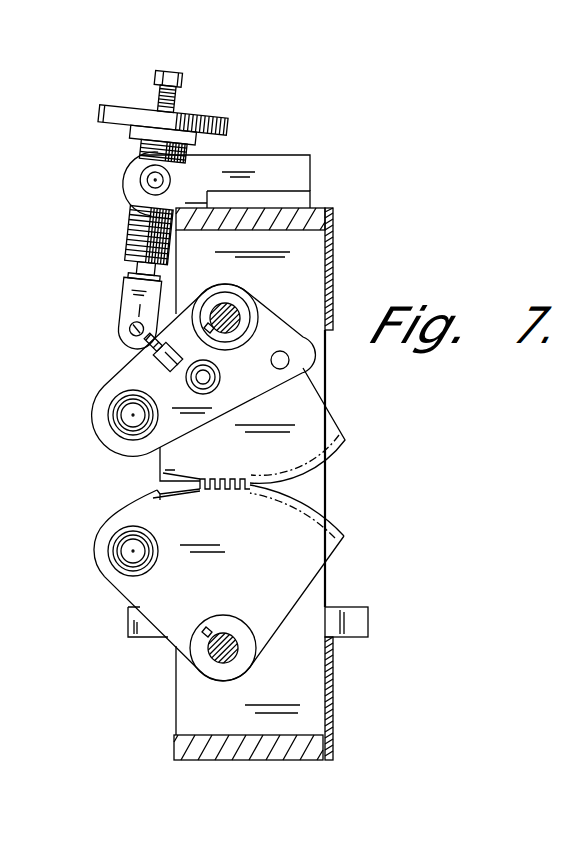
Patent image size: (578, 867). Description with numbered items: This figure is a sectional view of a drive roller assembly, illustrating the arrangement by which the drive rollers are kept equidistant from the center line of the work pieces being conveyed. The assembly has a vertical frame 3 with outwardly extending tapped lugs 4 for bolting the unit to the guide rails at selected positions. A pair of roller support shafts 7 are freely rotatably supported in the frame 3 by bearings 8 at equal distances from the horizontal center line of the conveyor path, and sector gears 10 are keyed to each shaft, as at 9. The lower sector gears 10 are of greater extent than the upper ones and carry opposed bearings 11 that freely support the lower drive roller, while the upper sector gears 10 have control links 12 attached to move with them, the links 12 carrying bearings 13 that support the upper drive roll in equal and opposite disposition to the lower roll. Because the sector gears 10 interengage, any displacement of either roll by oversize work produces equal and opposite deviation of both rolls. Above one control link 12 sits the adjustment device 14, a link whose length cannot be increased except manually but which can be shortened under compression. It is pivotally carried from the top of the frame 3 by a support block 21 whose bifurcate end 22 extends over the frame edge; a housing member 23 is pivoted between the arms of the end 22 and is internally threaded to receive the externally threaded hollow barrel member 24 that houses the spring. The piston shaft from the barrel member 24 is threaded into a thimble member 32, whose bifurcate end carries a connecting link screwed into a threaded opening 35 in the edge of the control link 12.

The vertical frame 3 is at (306, 218).
The tapped lugs 4 is at (350, 618).
The roller support shafts 7 is at (236, 311).
The bearings 8 is at (168, 72).
The key 9 is at (205, 326).
The sector gears 10 is at (317, 423).
The bearings 11 is at (117, 552).
The control links 12 is at (118, 380).
The bearings 13 is at (117, 421).
The adjustment device 14 is at (164, 116).
The support block 21 is at (268, 168).
The bifurcate end 22 is at (173, 173).
The housing member 23 is at (146, 183).
The barrel member 24 is at (149, 235).
The thimble member 32 is at (140, 305).
The threaded opening 35 is at (172, 370).